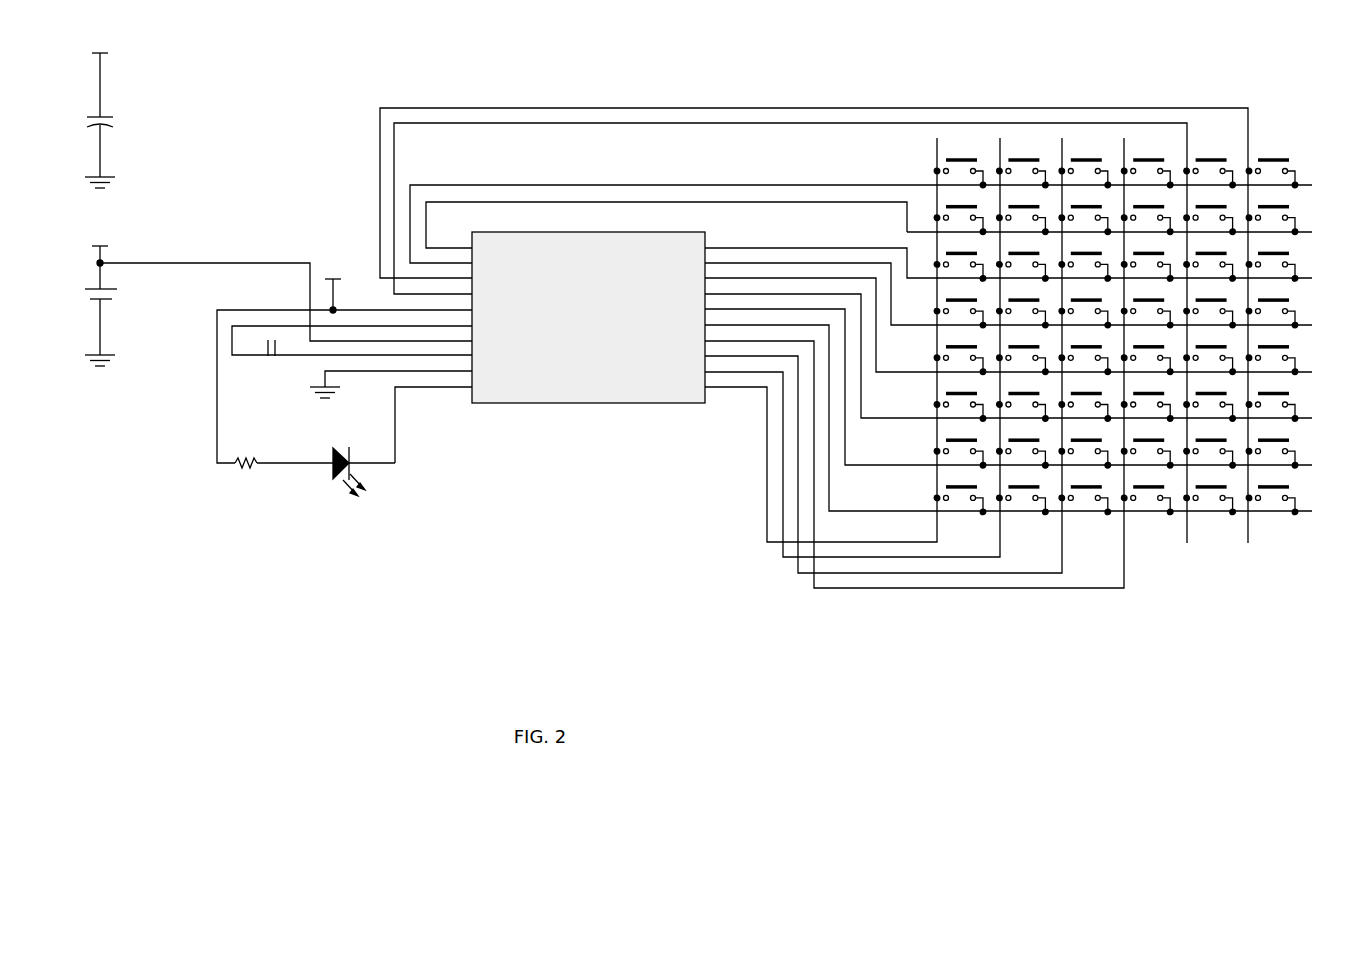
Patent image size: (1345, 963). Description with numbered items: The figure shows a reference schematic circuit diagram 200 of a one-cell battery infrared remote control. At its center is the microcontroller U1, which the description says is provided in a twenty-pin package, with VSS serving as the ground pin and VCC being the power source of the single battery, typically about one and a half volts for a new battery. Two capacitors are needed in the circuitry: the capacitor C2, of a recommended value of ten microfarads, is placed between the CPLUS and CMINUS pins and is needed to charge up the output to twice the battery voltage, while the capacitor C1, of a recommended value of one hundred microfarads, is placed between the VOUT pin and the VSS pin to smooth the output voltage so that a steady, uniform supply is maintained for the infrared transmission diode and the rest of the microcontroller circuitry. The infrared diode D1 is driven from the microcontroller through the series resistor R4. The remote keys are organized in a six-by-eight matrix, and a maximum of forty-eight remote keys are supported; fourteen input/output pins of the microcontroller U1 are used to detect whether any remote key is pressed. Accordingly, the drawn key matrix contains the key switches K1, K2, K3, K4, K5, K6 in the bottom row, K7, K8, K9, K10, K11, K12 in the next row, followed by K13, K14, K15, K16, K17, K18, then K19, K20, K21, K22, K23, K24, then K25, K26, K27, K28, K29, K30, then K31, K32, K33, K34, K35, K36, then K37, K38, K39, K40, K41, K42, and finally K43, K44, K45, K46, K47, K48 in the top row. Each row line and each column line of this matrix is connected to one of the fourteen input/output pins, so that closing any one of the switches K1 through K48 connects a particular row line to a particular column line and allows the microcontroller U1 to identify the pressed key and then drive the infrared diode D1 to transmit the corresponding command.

The reference schematic circuit diagram 200 is at (670, 358).
The integrated circuit U1 is at (589, 311).
The capacitor 100nF C1 is at (80, 114).
The capacitor 10uF C2 is at (269, 357).
The resistor 6R R4 is at (246, 465).
The infra-red diode D1 is at (355, 486).
The key switch K1 is at (960, 494).
The key switch K2 is at (1023, 494).
The key switch K3 is at (1085, 494).
The key switch K4 is at (1147, 494).
The key switch K5 is at (1210, 494).
The key switch K6 is at (1272, 494).
The key switch K7 is at (960, 447).
The key switch K8 is at (1023, 447).
The key switch K9 is at (1085, 447).
The key switch K10 is at (1147, 447).
The key switch K11 is at (1210, 447).
The key switch K12 is at (1272, 447).
The key switch K13 is at (960, 400).
The key switch K14 is at (1023, 400).
The key switch K15 is at (1085, 400).
The key switch K16 is at (1147, 400).
The key switch K17 is at (1210, 400).
The key switch K18 is at (1272, 400).
The key switch K19 is at (960, 354).
The key switch K20 is at (1023, 354).
The key switch K21 is at (1085, 354).
The key switch K22 is at (1147, 354).
The key switch K23 is at (1210, 354).
The key switch K24 is at (1272, 354).
The key switch K25 is at (960, 307).
The key switch K26 is at (1023, 307).
The key switch K27 is at (1085, 307).
The key switch K28 is at (1147, 307).
The key switch K29 is at (1210, 307).
The key switch K30 is at (1272, 307).
The key switch K31 is at (960, 260).
The key switch K32 is at (1023, 260).
The key switch K33 is at (1085, 260).
The key switch K34 is at (1147, 260).
The key switch K35 is at (1210, 260).
The key switch K36 is at (1272, 260).
The key switch K37 is at (960, 214).
The key switch K38 is at (1023, 214).
The key switch K39 is at (1085, 214).
The key switch K40 is at (1147, 214).
The key switch K41 is at (1210, 214).
The key switch K42 is at (1272, 214).
The key switch K43 is at (960, 167).
The key switch K44 is at (1023, 167).
The key switch K45 is at (1085, 167).
The key switch K46 is at (1147, 167).
The key switch K47 is at (1210, 167).
The key switch K48 is at (1272, 167).